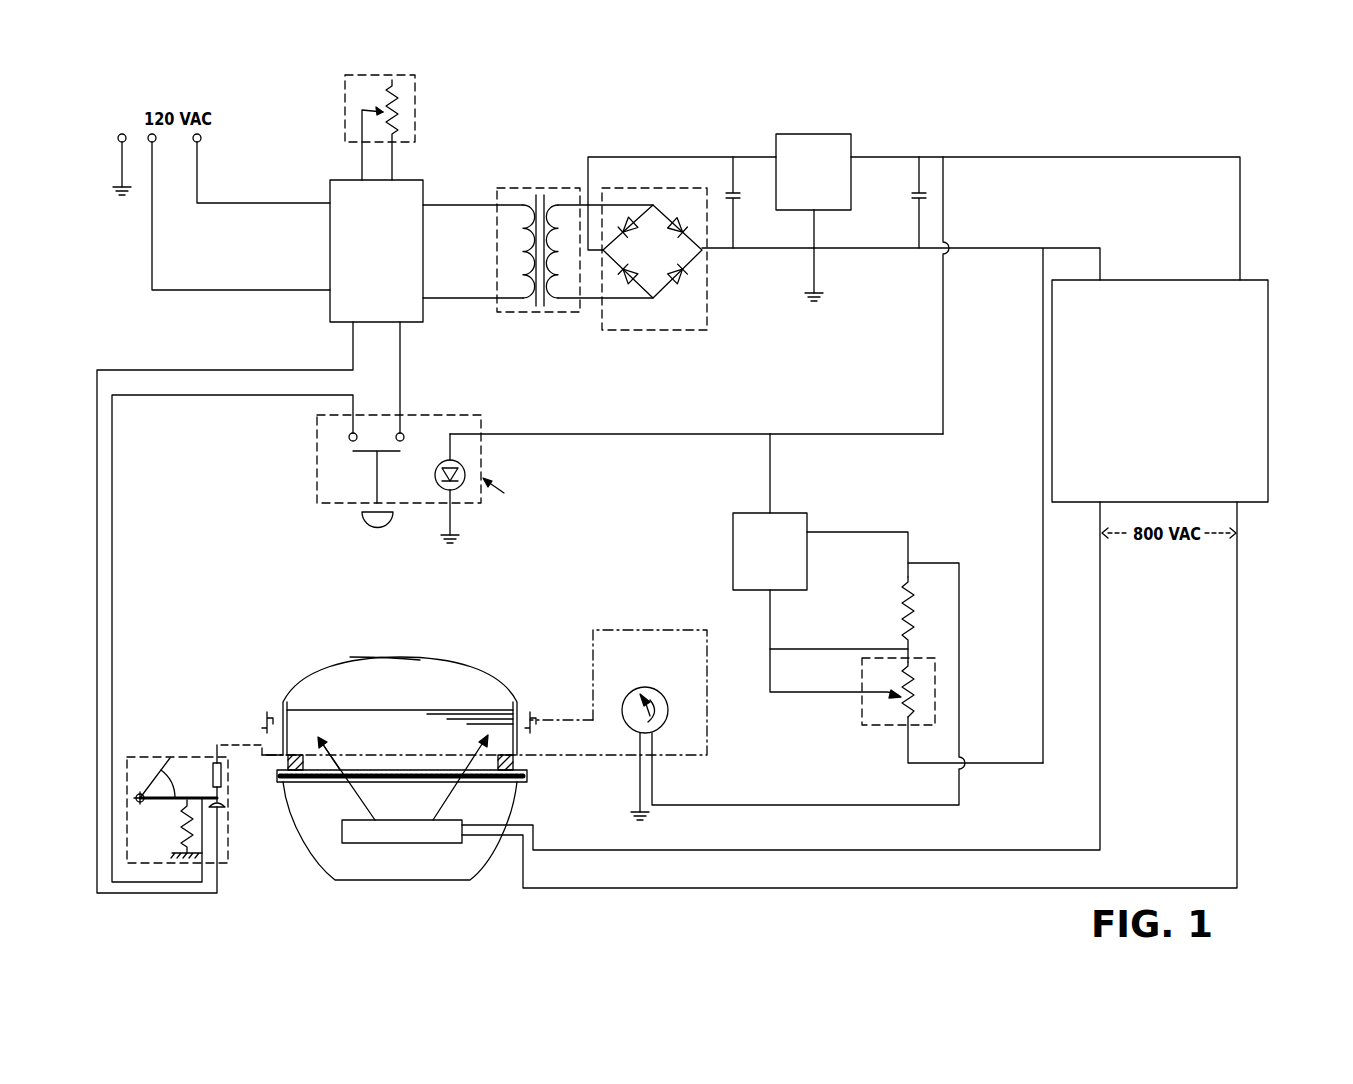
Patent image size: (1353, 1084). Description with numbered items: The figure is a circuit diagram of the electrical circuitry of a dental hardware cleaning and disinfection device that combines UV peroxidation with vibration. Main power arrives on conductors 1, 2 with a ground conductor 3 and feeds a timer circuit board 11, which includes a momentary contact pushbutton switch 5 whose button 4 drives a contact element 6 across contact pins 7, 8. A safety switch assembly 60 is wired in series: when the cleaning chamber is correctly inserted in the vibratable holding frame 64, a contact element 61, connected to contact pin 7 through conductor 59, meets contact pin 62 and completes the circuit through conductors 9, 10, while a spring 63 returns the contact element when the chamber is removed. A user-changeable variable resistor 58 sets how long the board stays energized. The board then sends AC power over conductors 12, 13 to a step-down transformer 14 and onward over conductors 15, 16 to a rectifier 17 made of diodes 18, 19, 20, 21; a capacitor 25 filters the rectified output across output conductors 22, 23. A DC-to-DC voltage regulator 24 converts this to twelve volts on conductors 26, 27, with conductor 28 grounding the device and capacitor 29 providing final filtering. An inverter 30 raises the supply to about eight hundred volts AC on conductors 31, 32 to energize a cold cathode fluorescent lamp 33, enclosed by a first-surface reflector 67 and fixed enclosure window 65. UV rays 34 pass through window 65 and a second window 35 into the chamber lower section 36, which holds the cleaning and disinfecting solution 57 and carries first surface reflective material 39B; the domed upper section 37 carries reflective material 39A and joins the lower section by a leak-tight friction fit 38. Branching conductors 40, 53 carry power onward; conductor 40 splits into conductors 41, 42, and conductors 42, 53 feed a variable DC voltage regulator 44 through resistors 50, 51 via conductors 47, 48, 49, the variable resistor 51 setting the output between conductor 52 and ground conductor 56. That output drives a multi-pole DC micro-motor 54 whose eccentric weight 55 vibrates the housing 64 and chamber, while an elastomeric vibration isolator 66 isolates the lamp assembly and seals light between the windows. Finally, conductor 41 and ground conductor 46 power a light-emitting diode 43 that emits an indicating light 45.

The conductor 1 is at (256, 201).
The conductor 2 is at (256, 292).
The ground conductor 3 is at (121, 160).
The pushbutton switch button 4 is at (360, 519).
The momentary contact pushbutton switch 5 is at (316, 452).
The contact element 6 is at (366, 453).
The contact pin 7 is at (349, 437).
The contact pin 8 is at (404, 437).
The conductor 9 is at (351, 350).
The conductor 10 is at (402, 370).
The timer circuit board 11 is at (334, 179).
The conductor 12 is at (481, 203).
The conductor 13 is at (480, 300).
The step-down transformer 14 is at (513, 188).
The conductor 15 is at (590, 203).
The conductor 16 is at (590, 300).
The AC-to-DC voltage rectifier 17 is at (648, 333).
The diode 18 is at (634, 234).
The diode 19 is at (636, 274).
The diode 20 is at (690, 224).
The diode 21 is at (692, 282).
The output conductor 22 is at (668, 155).
The output conductor 23 is at (755, 250).
The DC-to-DC voltage regulator 24 is at (809, 133).
The capacitor 25 is at (727, 194).
The conductor 26 is at (888, 155).
The conductor 27 is at (878, 251).
The conductor 28 is at (812, 276).
The capacitor 29 is at (913, 194).
The inverter 30 is at (1158, 279).
The conductor 31 is at (1098, 564).
The conductor 32 is at (1239, 563).
The cold cathode fluorescent (CCF) lamp 33 is at (362, 846).
The UV rays 34 is at (430, 801).
The window 35 is at (412, 750).
The lower section 36 is at (519, 740).
The upper section 37 is at (306, 681).
The friction fit 38 is at (506, 698).
The first surface reflective material 39A is at (392, 660).
The first surface reflective material 39B is at (290, 720).
The branching conductor 40 is at (945, 189).
The branching conductor 41 is at (562, 432).
The conductor 42 is at (768, 478).
The light-emitting diode (LED) 43 is at (435, 475).
The variable DC voltage regulator 44 is at (732, 536).
The indicating light 45 is at (504, 493).
The ground conductor 46 is at (448, 528).
The conductor 47 is at (856, 531).
The conductor 48 is at (768, 618).
The conductor 49 is at (858, 648).
The resistor 50 is at (900, 602).
The variable resistor 51 is at (862, 710).
The conductor 52 is at (962, 610).
The branching conductor 53 is at (905, 754).
The multi-pole DC micro-motor 54 is at (668, 704).
The eccentric weight 55 is at (642, 694).
The ground conductor 56 is at (639, 776).
The cleaning and disinfecting solution 57 is at (366, 714).
The variable resistor 58 is at (345, 111).
The conductor 59 is at (232, 397).
The switch assembly 60 is at (154, 756).
The contact element 61 is at (210, 794).
The contact pin 62 is at (226, 806).
The spring 63 is at (180, 814).
The vibratable holding frame 64 is at (596, 629).
The fixed enclosure window 65 is at (529, 776).
The elastomeric vibration isolator 66 is at (276, 768).
The first-surface reflector 67 is at (508, 806).